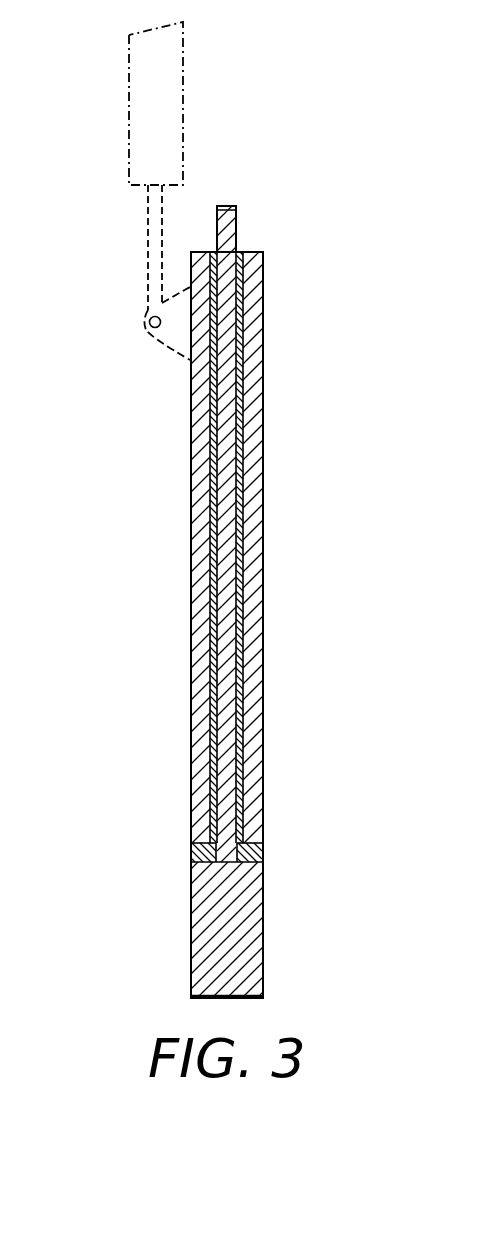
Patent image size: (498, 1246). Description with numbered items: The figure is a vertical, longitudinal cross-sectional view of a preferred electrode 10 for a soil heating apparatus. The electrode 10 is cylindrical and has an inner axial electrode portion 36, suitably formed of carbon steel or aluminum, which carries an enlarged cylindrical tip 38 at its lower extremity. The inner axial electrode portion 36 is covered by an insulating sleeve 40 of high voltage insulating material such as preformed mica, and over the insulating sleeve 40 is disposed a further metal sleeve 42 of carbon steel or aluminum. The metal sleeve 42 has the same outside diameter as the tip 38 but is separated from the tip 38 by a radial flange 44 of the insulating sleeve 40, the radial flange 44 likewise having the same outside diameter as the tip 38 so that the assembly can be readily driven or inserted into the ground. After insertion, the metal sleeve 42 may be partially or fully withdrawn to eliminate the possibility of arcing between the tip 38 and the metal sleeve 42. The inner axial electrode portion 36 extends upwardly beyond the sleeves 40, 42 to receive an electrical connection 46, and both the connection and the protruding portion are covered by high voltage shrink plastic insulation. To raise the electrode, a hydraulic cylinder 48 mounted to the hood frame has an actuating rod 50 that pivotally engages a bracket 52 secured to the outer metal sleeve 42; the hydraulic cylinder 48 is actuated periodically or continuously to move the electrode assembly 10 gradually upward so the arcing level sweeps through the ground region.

The electrode 10 is at (189, 720).
The inner axial electrode portion 36 is at (228, 660).
The enlarged cylindrical tip 38 is at (260, 983).
The insulating sleeve 40 is at (238, 336).
The metal sleeve 42 is at (255, 530).
The radial flange 44 is at (260, 851).
The electrical connection 46 is at (237, 209).
The hydraulic cylinder 48 is at (128, 118).
The actuating rod 50 is at (148, 263).
The bracket 52 is at (172, 352).